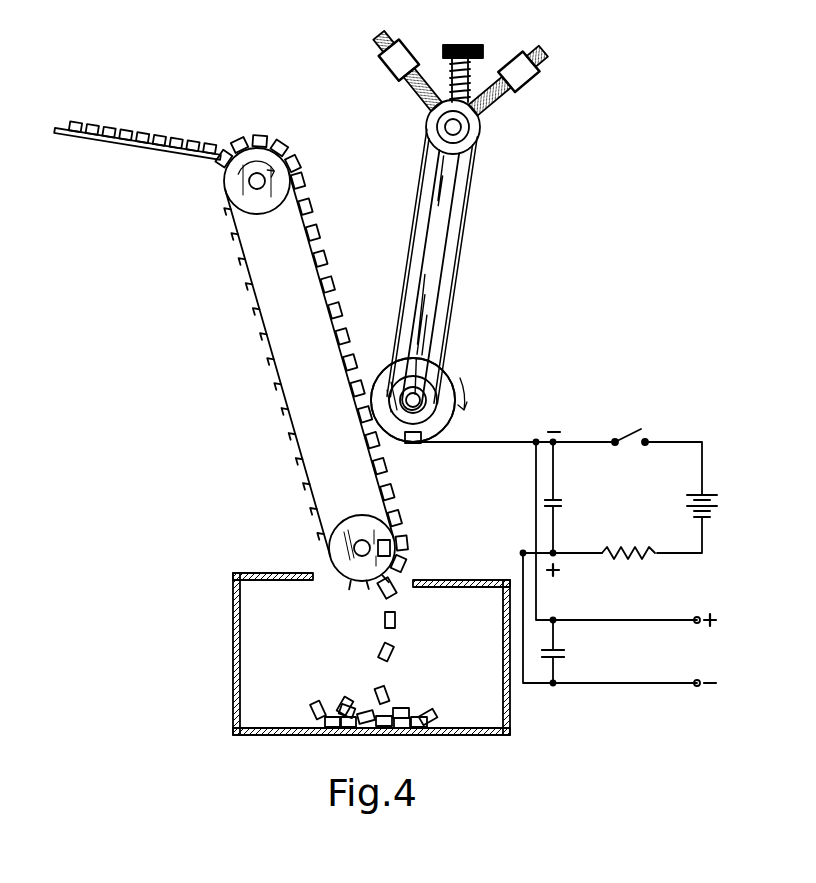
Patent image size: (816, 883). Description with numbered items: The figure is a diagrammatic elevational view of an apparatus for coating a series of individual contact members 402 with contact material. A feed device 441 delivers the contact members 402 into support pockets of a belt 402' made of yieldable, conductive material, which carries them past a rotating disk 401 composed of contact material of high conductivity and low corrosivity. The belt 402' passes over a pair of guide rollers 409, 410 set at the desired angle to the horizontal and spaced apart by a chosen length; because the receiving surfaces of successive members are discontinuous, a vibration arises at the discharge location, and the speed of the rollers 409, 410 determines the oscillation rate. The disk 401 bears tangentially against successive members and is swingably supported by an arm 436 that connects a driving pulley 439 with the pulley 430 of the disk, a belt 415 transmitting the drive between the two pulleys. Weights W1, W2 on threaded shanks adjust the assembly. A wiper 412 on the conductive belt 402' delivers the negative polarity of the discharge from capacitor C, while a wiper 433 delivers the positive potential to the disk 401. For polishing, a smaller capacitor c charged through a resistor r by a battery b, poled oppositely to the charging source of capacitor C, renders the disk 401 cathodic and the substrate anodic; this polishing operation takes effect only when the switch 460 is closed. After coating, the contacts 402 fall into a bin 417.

The feed device 441 is at (98, 150).
The contact member 402 is at (347, 426).
The belt 402' is at (287, 385).
The guide roller 409 is at (292, 172).
The guide roller 410 is at (328, 553).
The wiper 412 is at (398, 541).
The bin 417 is at (233, 730).
The belt 415 is at (465, 268).
The arm 436 is at (452, 197).
The driving pulley 439 is at (480, 136).
The weight W1 is at (538, 88).
The weight W2 is at (386, 72).
The disk 401 is at (450, 365).
The pulley 430 is at (454, 420).
The wiper 433 is at (420, 447).
The switch 460 is at (630, 430).
The battery b is at (709, 518).
The resistor r is at (630, 558).
The capacitor c is at (563, 503).
The capacitor C is at (565, 655).